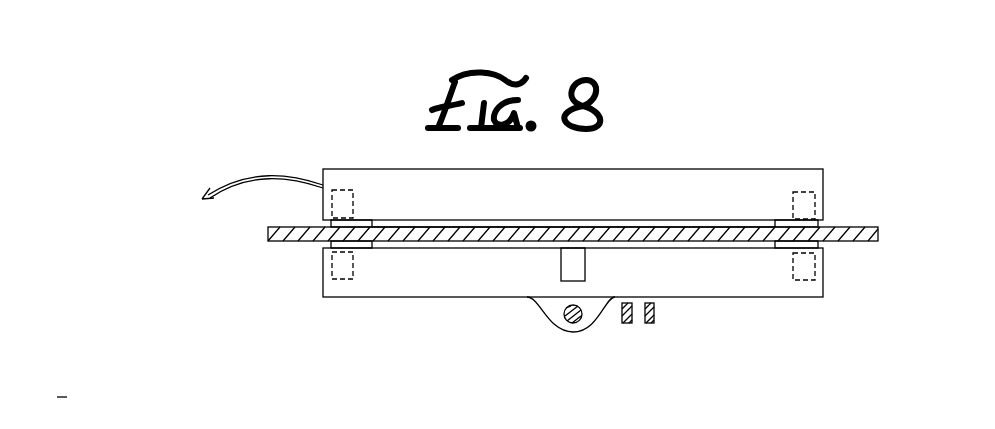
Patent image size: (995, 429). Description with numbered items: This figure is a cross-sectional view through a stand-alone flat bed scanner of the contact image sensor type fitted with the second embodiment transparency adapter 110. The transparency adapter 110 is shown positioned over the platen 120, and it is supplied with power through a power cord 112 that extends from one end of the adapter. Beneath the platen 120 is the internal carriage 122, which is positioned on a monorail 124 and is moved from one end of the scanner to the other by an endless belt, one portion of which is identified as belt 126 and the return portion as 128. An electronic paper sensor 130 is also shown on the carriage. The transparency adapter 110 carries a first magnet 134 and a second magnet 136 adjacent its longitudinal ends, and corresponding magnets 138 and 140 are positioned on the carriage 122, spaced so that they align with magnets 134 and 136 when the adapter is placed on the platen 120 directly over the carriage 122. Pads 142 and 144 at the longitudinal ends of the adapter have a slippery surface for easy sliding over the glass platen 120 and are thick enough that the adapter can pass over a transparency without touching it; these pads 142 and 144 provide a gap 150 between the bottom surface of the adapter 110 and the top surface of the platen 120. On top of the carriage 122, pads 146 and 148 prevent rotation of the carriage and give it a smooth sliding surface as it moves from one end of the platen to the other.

The transparency adapter 110 is at (362, 167).
The power cord 112 is at (277, 178).
The platen 120 is at (270, 233).
The internal carriage 122 is at (485, 268).
The monorail 124 is at (567, 325).
The endless belt 126 is at (654, 312).
The return portion of endless belt 128 is at (628, 323).
The electronic paper sensor 130 is at (573, 263).
The first magnet 134 is at (345, 210).
The second magnet 136 is at (805, 200).
The carriage magnet 138 is at (345, 270).
The carriage magnet 140 is at (805, 282).
The pad 142 is at (363, 220).
The pad 144 is at (815, 222).
The carriage pad 146 is at (363, 244).
The carriage pad 148 is at (812, 245).
The gap 150 is at (662, 226).